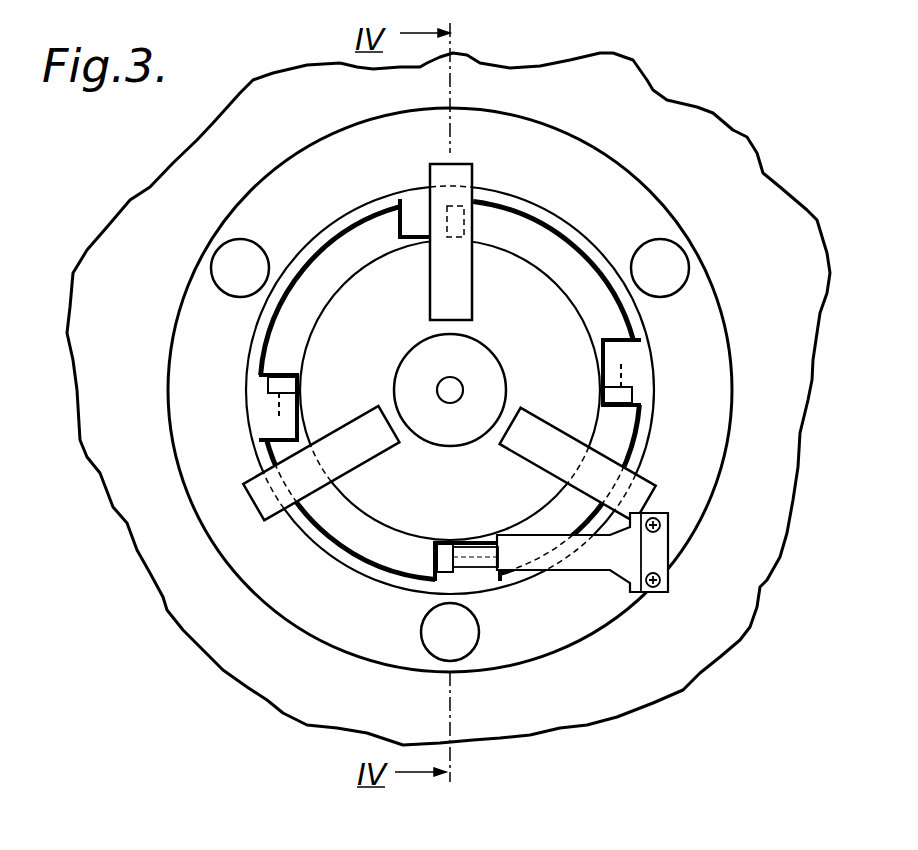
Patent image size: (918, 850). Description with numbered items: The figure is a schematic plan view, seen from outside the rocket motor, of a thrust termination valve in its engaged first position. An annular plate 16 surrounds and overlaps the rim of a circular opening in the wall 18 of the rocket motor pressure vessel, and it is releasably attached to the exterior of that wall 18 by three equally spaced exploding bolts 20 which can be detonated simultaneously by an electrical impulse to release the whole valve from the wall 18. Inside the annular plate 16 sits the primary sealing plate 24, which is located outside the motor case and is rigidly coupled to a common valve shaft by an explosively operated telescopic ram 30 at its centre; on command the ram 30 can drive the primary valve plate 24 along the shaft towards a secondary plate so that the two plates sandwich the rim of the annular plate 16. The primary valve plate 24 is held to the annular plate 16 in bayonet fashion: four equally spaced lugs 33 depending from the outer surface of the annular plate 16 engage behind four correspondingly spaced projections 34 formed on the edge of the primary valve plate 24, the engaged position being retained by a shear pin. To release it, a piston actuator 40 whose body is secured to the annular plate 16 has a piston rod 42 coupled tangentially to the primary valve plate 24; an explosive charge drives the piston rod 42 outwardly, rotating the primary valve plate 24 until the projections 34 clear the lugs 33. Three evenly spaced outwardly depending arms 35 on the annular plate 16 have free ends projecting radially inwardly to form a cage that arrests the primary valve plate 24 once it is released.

The annular plate 16 is at (595, 198).
The wall 18 is at (760, 588).
The exploding bolts 20 is at (232, 255).
The primary sealing plate 24 is at (541, 313).
The explosively operated telescopic ram 30 is at (492, 383).
The lugs 33 is at (418, 224).
The projections 34 is at (285, 382).
The outwardly depending arms 35 is at (460, 176).
The piston actuator 40 is at (538, 540).
The piston rod 42 is at (455, 545).